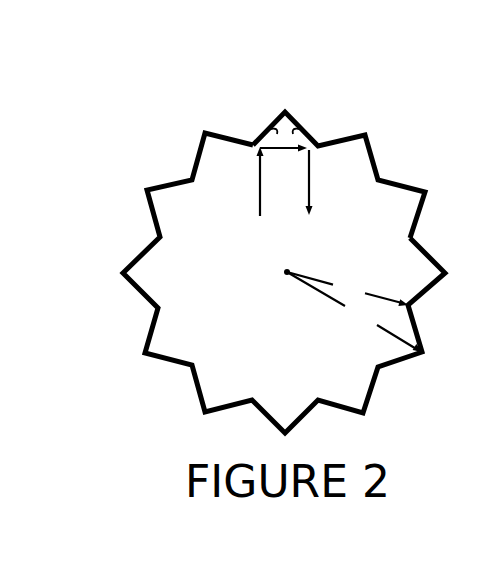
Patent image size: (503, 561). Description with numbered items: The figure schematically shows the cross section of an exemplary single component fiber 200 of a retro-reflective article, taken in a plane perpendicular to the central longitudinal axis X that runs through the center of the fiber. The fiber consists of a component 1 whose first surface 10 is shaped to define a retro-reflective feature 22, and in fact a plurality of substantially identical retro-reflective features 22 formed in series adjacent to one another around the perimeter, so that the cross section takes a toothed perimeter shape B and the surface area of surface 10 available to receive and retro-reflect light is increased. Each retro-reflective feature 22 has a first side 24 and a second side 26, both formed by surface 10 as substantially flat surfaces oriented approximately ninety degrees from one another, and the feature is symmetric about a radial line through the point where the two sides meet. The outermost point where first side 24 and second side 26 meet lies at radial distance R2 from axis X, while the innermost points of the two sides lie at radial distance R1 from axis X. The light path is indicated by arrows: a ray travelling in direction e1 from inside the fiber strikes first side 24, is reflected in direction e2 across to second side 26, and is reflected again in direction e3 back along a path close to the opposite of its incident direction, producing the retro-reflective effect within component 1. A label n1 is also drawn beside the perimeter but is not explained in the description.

The single component fiber 200 is at (153, 85).
The first surface 10 is at (150, 208).
The retro-reflective feature 22 is at (288, 105).
The first side 24 is at (266, 131).
The second side 26 is at (304, 131).
The component 1 is at (172, 280).
The perimeter shape B is at (165, 365).
The central longitudinal axis X is at (293, 308).
The radial distance R1 is at (347, 289).
The radial distance R2 is at (354, 312).
The direction e1 is at (248, 182).
The direction e2 is at (283, 158).
The direction e3 is at (323, 184).
The tooth count n1 is at (192, 216).